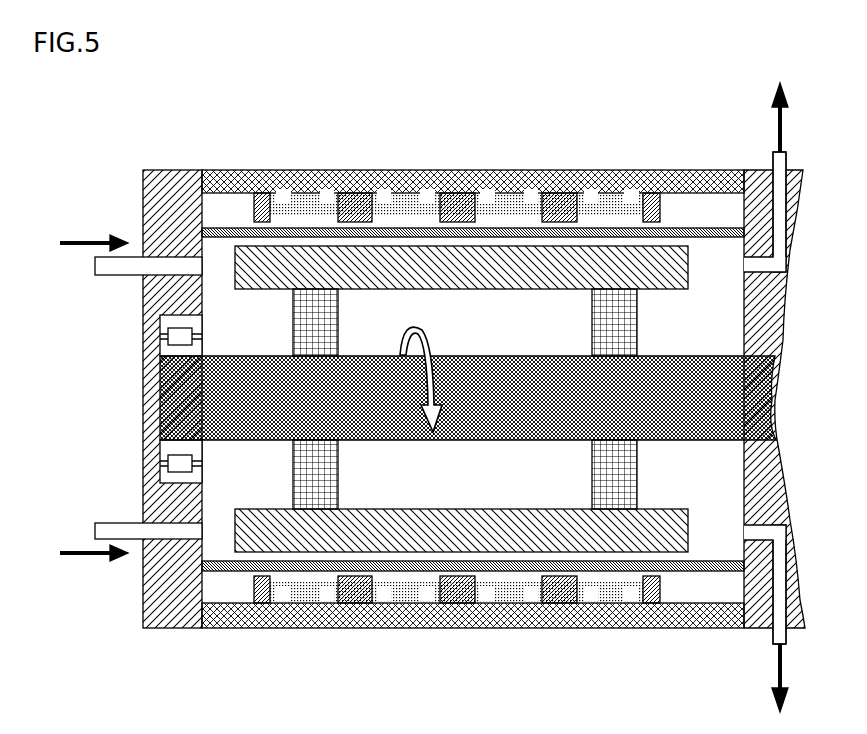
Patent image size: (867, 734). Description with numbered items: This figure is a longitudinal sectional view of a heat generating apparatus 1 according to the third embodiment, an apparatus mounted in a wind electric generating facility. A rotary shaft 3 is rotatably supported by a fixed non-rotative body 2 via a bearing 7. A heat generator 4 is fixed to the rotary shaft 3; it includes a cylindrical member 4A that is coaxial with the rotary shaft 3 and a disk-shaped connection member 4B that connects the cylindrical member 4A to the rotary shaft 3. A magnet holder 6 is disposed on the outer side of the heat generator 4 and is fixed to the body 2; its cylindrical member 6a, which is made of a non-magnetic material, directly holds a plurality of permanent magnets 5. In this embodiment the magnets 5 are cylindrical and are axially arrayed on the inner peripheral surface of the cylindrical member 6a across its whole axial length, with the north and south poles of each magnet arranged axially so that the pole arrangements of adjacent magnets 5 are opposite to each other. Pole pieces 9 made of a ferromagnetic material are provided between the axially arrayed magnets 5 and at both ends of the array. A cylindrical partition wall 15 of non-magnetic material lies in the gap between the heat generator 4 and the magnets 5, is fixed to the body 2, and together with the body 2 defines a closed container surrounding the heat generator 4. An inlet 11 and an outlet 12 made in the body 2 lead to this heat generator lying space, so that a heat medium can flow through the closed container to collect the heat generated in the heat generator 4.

The heat generating apparatus 1 is at (191, 153).
The body 2 is at (146, 170).
The rotary shaft 3 is at (165, 385).
The heat generator 4 is at (80, 288).
The cylindrical member 4A is at (255, 279).
The connection member 4B is at (293, 311).
The permanent magnets 5 is at (302, 192).
The magnet holder 6 is at (404, 172).
The cylindrical member 6a is at (456, 398).
The bearing 7 is at (160, 449).
The pole pieces 9 is at (259, 170).
The inlet 11 is at (95, 266).
The outlet 12 is at (787, 150).
The partition wall 15 is at (703, 571).